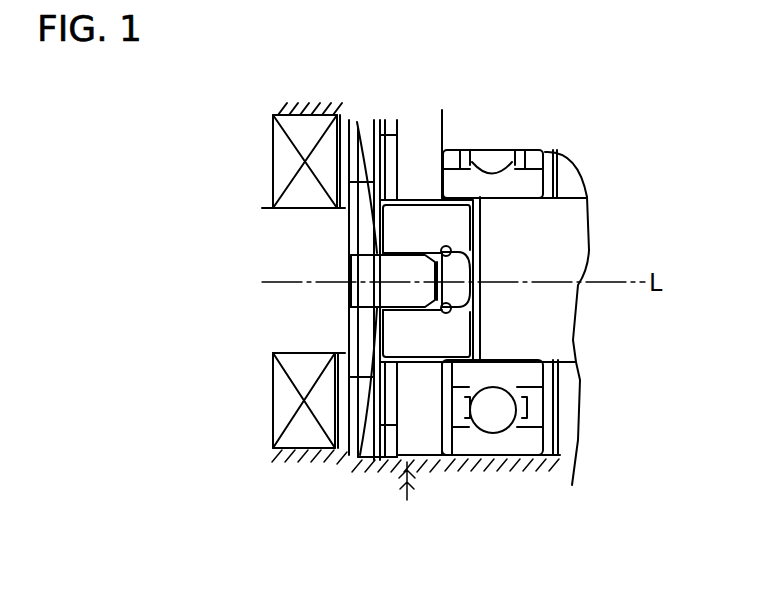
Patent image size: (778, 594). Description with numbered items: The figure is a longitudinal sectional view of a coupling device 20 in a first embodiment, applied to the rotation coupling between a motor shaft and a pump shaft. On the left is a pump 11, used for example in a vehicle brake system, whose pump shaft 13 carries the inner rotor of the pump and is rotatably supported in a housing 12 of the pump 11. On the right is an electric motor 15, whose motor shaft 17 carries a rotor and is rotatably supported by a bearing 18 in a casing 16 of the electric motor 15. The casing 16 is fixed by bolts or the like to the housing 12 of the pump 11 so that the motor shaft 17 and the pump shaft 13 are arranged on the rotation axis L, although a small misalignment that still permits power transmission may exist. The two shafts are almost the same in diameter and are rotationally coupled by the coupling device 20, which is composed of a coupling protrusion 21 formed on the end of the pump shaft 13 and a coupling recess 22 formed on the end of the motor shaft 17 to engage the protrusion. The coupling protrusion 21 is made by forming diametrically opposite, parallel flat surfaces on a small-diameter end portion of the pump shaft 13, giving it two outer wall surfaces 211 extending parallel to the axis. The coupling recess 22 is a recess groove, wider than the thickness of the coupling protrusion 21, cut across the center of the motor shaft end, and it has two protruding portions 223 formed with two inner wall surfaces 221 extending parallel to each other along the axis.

The pump 11 is at (298, 101).
The housing 12 is at (318, 462).
The pump shaft 13 is at (275, 345).
The electric motor 15 is at (553, 140).
The casing 16 is at (527, 442).
The motor shaft 17 is at (567, 215).
The bearing 18 is at (545, 458).
The coupling device 20 is at (420, 364).
The coupling protrusion 21 is at (395, 273).
The coupling recess 22 is at (408, 245).
The outer wall surfaces 211 is at (357, 122).
The inner wall surfaces 221 is at (425, 250).
The protruding portions 223 is at (453, 217).